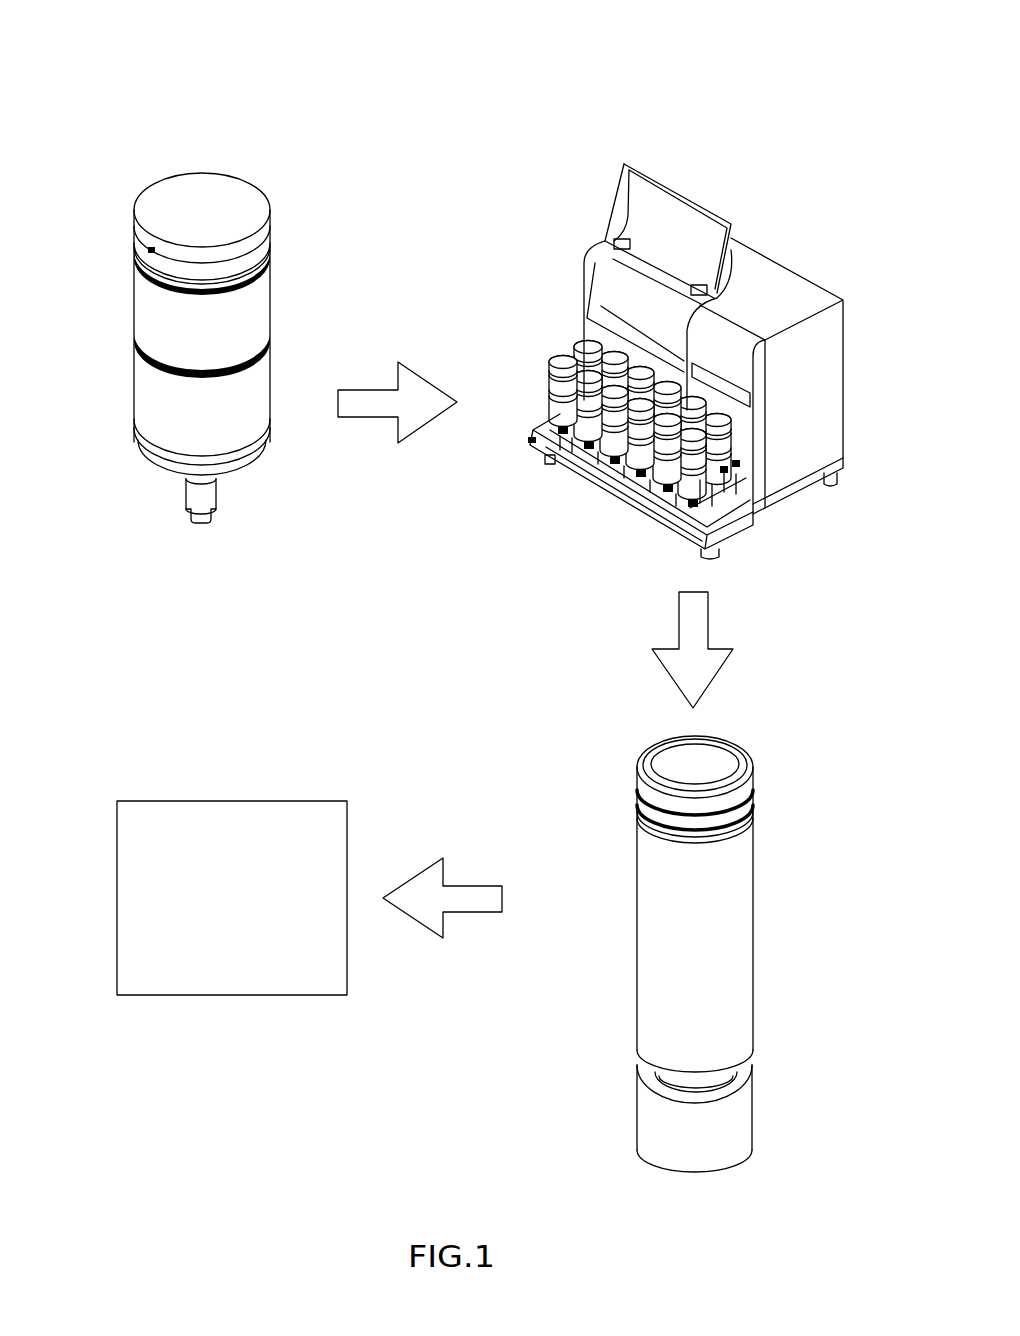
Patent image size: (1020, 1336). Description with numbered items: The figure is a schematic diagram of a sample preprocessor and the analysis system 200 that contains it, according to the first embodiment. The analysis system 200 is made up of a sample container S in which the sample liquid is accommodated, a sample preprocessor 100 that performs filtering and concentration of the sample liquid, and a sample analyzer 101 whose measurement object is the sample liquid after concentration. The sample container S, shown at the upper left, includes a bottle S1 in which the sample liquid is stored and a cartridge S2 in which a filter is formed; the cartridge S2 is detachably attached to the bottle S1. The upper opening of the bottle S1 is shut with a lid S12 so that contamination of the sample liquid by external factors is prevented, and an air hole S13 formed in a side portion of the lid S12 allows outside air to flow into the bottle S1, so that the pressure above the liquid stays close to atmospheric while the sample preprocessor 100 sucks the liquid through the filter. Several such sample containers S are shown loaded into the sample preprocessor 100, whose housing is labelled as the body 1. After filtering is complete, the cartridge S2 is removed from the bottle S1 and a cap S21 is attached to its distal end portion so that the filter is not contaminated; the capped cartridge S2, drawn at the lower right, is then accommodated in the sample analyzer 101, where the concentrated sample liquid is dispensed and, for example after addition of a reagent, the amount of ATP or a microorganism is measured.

The analysis system 200 is at (722, 70).
The sample preprocessor 100 is at (826, 165).
The device body 1 is at (772, 250).
The sample analyzer 101 is at (232, 801).
The sample container S is at (128, 150).
The bottle S1 is at (132, 299).
The lid S12 is at (132, 219).
The air hole S13 is at (146, 249).
The cartridge S2 is at (184, 484).
The cap S21 is at (752, 1121).